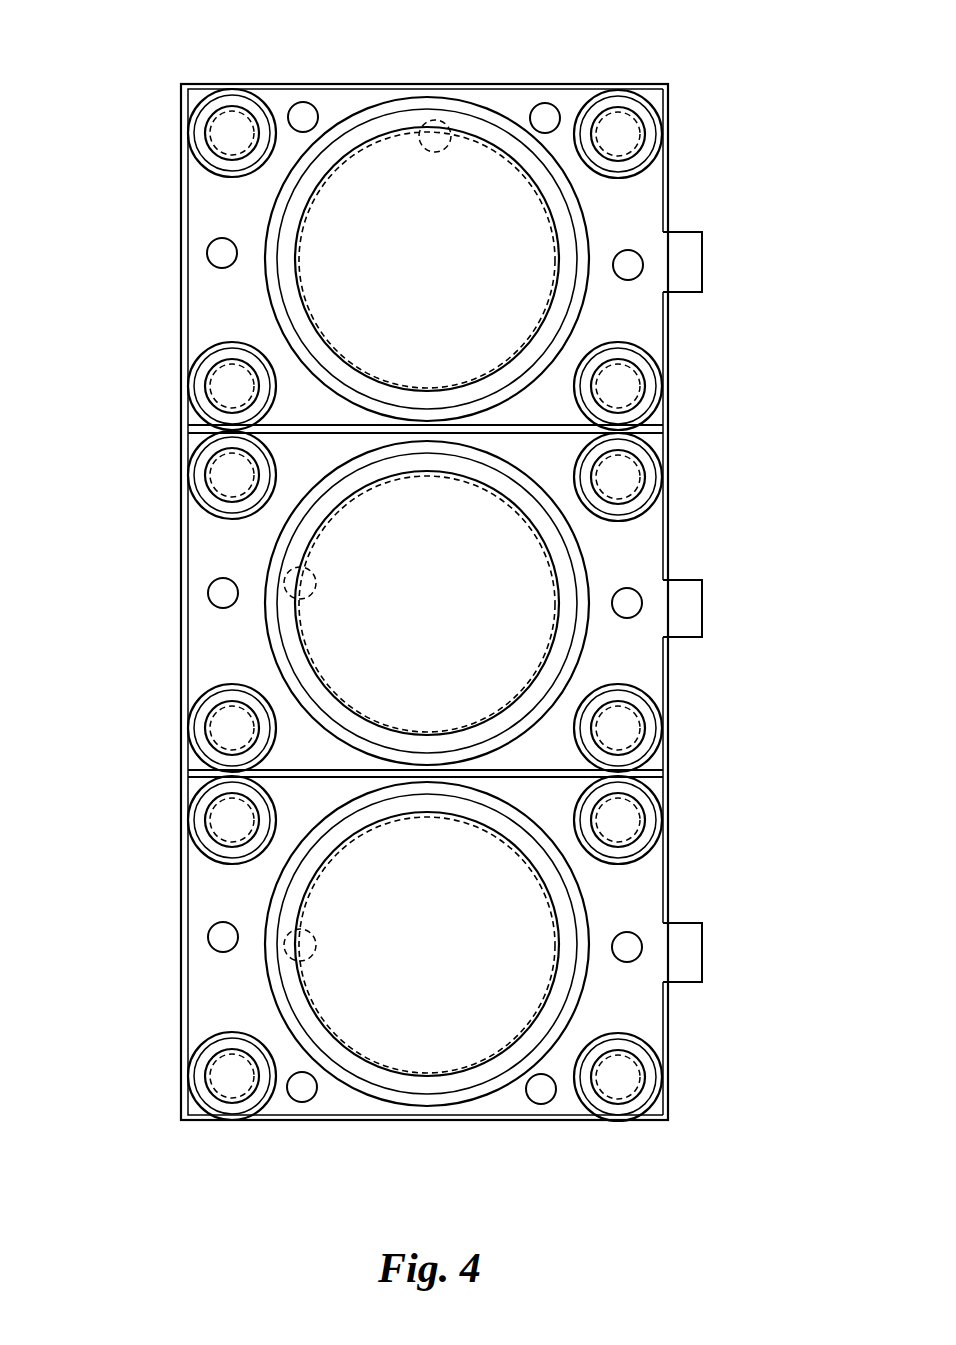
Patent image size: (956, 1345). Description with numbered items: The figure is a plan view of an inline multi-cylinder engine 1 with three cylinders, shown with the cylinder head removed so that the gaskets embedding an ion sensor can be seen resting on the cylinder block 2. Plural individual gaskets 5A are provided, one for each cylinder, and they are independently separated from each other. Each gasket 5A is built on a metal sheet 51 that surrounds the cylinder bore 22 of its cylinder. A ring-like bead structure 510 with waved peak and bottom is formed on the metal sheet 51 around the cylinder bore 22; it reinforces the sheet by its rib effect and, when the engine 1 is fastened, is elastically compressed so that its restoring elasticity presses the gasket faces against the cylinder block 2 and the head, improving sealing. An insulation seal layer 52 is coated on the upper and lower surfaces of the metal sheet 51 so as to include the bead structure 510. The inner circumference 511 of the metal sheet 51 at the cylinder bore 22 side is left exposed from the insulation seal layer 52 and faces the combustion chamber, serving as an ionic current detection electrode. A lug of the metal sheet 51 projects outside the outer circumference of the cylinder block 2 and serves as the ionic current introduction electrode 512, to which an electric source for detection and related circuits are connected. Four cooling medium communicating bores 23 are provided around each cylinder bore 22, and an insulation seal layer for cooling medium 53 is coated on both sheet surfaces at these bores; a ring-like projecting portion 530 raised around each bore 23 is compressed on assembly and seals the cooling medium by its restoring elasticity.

The engine 1 is at (589, 78).
The cylinder block 2 is at (670, 354).
The individual gasket 5A is at (674, 172).
The metal sheet 51 is at (538, 88).
The bead structure 510 is at (352, 125).
The inner circumference 511 is at (518, 172).
The ionic current introduction electrode 512 is at (688, 261).
The insulation seal layer 52 is at (623, 218).
The insulation seal layer for cooling medium 53 is at (650, 101).
The projecting portion 530 is at (642, 123).
The cylinder bore 22 is at (436, 120).
The cooling medium communicating bore 23 is at (621, 112).